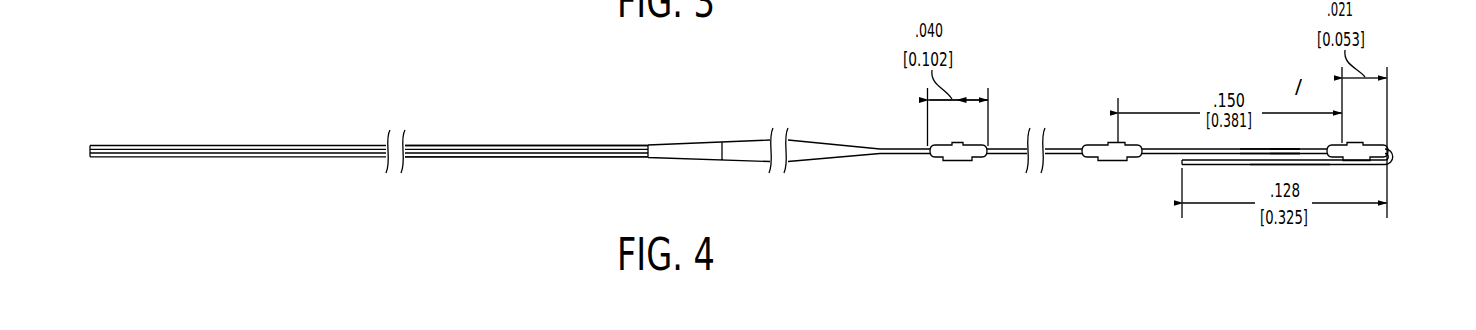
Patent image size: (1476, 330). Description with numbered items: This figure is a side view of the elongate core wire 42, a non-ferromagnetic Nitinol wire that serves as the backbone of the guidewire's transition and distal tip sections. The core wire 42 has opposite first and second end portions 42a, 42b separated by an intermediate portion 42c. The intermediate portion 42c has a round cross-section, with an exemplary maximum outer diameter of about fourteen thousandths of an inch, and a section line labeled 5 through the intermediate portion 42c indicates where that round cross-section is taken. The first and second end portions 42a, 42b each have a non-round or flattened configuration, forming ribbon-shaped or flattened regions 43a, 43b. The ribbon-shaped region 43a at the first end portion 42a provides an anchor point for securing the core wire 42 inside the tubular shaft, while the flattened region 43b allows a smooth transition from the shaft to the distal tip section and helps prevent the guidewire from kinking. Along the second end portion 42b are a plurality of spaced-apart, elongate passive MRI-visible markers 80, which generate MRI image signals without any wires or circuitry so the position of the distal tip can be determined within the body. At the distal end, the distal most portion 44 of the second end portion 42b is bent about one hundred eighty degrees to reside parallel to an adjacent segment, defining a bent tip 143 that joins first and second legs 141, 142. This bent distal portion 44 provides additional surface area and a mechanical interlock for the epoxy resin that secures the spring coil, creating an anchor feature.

The elongate core wire 42 is at (1036, 95).
The first end portion 42a is at (236, 145).
The ribbon-shaped region 43a is at (490, 145).
The intermediate portion 42c is at (796, 140).
The second end portion 42b is at (1292, 147).
The flattened region 43b is at (1262, 147).
The passive MRI-visible markers 80 is at (955, 144).
The first leg 141 is at (1286, 148).
The second leg 142 is at (1290, 168).
The bent tip 143 is at (1394, 158).
The distal most portion 44 is at (1207, 168).
The section line 5- 5 is at (758, 190).